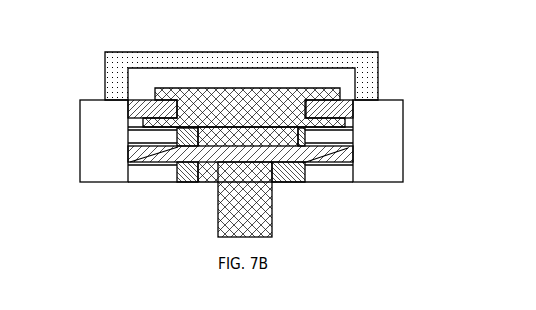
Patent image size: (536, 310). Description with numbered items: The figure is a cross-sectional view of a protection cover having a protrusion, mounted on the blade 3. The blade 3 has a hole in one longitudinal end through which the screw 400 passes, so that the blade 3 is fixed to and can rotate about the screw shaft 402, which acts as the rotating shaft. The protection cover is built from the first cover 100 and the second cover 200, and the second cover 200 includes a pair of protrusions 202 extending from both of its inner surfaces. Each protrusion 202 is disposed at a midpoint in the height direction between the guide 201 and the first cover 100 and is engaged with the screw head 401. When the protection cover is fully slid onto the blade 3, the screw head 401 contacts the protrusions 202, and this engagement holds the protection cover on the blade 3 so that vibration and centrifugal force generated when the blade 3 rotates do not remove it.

The first cover 100 is at (207, 49).
The second cover 200 is at (105, 117).
The guide 201 is at (147, 142).
The protrusion 202 is at (142, 106).
The screw 400 is at (329, 87).
The screw head 401 is at (263, 108).
The screw shaft 402 is at (262, 198).
The blade 3 is at (212, 150).